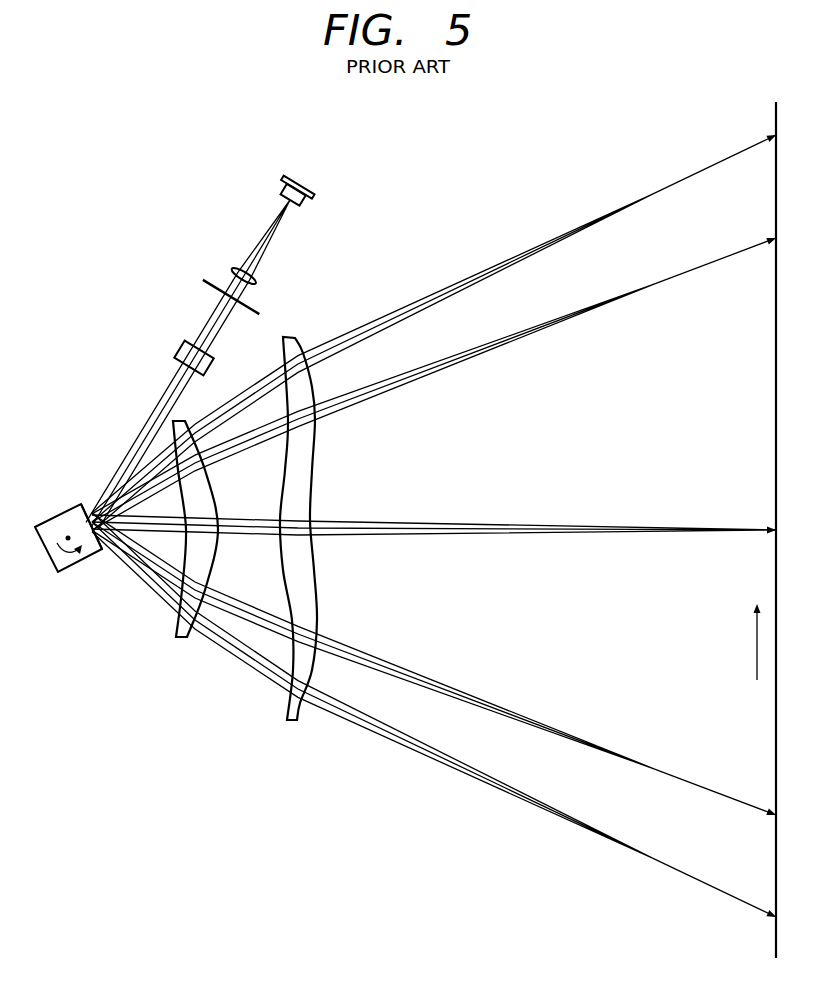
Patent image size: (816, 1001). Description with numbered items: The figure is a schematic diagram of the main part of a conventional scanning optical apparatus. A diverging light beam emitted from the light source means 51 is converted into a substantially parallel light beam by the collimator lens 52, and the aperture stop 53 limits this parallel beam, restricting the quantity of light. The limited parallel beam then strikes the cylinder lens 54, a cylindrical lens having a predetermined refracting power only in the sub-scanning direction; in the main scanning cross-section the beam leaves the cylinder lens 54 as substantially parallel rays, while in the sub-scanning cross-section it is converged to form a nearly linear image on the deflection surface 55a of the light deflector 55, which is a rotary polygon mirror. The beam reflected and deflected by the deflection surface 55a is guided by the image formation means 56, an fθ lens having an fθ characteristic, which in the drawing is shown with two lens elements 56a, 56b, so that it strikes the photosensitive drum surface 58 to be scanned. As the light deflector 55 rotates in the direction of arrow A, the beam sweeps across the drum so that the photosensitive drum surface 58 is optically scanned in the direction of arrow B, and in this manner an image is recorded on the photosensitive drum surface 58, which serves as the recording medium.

The light source means 51 is at (313, 200).
The collimator lens 52 is at (233, 269).
The aperture stop 53 is at (207, 279).
The cylinder lens 54 is at (180, 346).
The light deflector 55 is at (48, 518).
The deflection surface 55a is at (88, 503).
The image formation means 56 is at (242, 531).
The first scanning lens 56a is at (188, 638).
The second scanning lens 56b is at (288, 715).
The photosensitive drum surface 58 is at (773, 104).
The arrow A is at (71, 573).
The arrow B is at (748, 642).